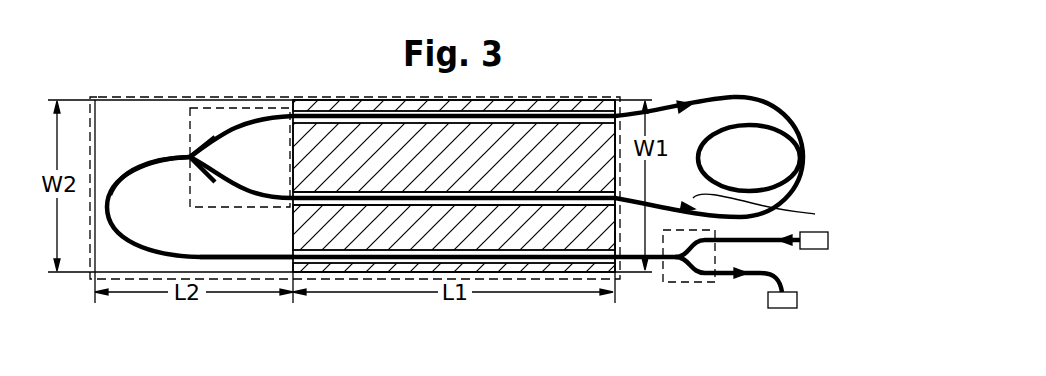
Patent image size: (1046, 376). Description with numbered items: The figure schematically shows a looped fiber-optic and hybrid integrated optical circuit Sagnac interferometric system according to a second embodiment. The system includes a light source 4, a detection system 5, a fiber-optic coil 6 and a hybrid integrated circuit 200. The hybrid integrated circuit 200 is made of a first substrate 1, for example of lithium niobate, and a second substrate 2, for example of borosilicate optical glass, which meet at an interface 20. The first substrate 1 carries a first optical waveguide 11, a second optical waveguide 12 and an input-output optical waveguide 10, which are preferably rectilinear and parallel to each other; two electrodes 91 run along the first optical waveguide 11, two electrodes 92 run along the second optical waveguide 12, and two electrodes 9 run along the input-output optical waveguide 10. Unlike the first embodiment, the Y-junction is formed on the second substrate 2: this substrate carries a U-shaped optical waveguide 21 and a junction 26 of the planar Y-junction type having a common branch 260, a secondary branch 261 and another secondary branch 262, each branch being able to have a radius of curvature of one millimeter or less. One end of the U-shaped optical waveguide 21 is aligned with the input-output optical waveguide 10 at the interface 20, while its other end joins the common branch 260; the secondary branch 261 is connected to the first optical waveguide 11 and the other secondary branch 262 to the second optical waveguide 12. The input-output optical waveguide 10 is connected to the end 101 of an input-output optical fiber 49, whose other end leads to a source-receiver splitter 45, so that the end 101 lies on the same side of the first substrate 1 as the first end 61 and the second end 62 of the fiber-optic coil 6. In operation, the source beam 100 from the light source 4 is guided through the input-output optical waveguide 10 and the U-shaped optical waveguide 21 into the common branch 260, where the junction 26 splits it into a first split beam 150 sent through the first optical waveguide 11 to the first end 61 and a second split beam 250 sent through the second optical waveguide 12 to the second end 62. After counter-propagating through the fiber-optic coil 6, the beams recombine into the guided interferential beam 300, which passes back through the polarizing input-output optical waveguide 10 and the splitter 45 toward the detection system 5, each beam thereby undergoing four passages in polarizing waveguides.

The hybrid integrated circuit 200 is at (133, 97).
The U-shaped optical waveguide 21 is at (153, 160).
The common branch 260 is at (190, 157).
The secondary branch 262 is at (230, 120).
The secondary branch 261 is at (238, 190).
The junction 26 is at (190, 178).
The electrodes 92 is at (350, 111).
The second optical waveguide 12 is at (390, 116).
The first optical waveguide 11 is at (467, 192).
The electrodes 91 is at (497, 192).
The first substrate 1 is at (357, 272).
The input-output optical waveguide 10 is at (408, 257).
The electrodes 9 is at (530, 257).
The end of input-output optical fiber 101 is at (633, 263).
The second substrate 2 is at (222, 272).
The interface 20 is at (252, 258).
The second end of fiber-optic coil 62 is at (623, 102).
The first end of fiber-optic coil 61 is at (620, 194).
The second split beam 250 is at (683, 100).
The fiber-optic coil 6 is at (774, 135).
The first split beam 150 is at (773, 211).
The input-output optical fiber 49 is at (658, 260).
The source-receiver splitter 45 is at (688, 283).
The source beam 100 is at (782, 250).
The guided interferential beam 300 is at (743, 273).
The light source 4 is at (830, 240).
The detection system 5 is at (782, 308).